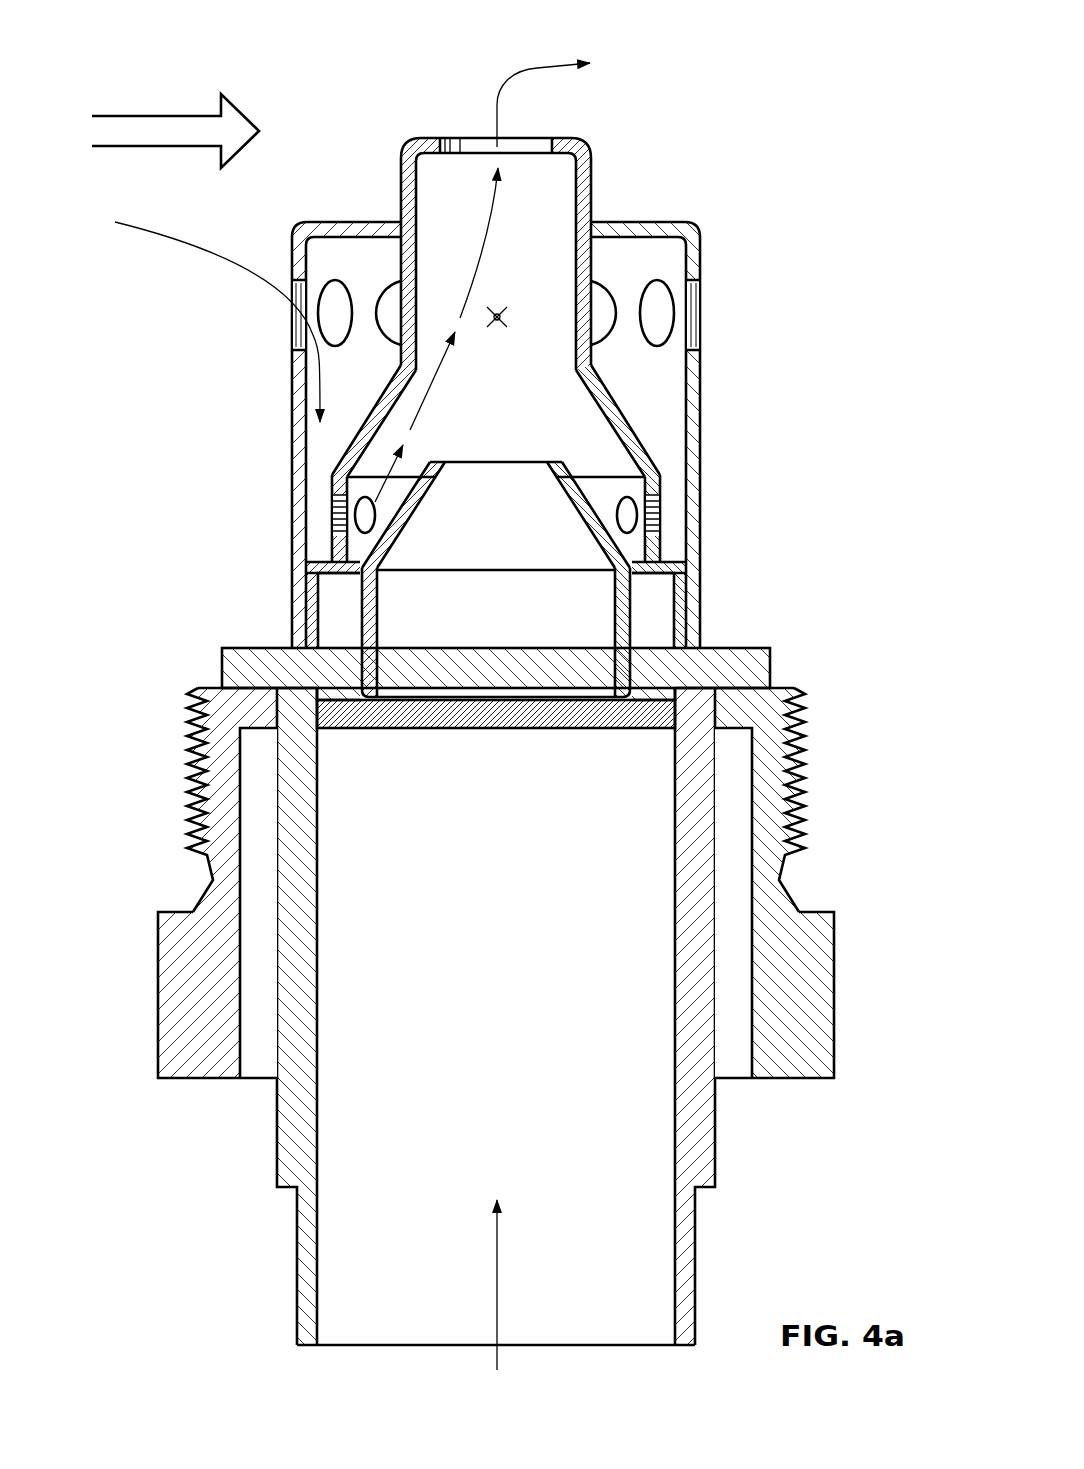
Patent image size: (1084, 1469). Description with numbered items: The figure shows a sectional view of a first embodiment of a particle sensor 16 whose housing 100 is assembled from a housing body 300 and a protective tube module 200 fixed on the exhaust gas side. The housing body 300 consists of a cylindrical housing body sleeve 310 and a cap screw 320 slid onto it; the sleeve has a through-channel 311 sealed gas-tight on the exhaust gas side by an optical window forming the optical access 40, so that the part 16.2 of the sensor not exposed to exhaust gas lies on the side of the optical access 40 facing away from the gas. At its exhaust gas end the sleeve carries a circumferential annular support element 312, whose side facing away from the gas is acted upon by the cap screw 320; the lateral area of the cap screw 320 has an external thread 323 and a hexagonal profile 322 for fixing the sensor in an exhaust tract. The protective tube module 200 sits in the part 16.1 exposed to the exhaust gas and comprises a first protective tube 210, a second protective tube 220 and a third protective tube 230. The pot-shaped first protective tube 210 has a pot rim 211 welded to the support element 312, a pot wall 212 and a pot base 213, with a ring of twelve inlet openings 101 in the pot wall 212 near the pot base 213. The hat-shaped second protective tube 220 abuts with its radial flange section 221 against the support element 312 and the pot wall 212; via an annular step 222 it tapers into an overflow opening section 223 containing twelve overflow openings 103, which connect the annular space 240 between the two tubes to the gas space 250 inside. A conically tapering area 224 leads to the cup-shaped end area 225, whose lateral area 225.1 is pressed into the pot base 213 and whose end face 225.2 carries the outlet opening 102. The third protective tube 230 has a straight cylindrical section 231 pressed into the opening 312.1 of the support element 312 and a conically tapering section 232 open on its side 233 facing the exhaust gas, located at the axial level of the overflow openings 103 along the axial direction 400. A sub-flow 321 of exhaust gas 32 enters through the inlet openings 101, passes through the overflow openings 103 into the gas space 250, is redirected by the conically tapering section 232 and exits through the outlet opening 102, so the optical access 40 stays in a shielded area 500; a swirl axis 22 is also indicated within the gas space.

The particle sensor 16 is at (850, 412).
The part exposed to the exhaust gas 16.1 is at (862, 313).
The part not exposed to the exhaust gas 16.2 is at (474, 871).
The swirl axis 22 is at (504, 316).
The exhaust gas 32 is at (130, 114).
The optical access 40 is at (532, 710).
The housing 100 is at (840, 538).
The inlet openings 101 is at (302, 334).
The outlet opening 102 is at (475, 146).
The overflow openings 103 is at (345, 525).
The protective tube module 200 is at (748, 262).
The first protective tube 210 is at (498, 405).
The pot rim 211 is at (310, 638).
The pot wall 212 is at (292, 462).
The pot base 213 is at (355, 222).
The second protective tube 220 is at (497, 494).
The radial flange section 221 is at (315, 600).
The annular step 222 is at (330, 562).
The overflow opening section 223 is at (656, 486).
The conically tapering area 224 is at (637, 444).
The end area 225 is at (509, 214).
The lateral area 225.1 is at (593, 184).
The end face 225.2 is at (557, 137).
The third protective tube 230 is at (498, 557).
The straight cylindrical section 231 is at (625, 608).
The conically tapering section 232 is at (610, 540).
The side facing the exhaust gas 233 is at (490, 462).
The annular space 240 is at (338, 388).
The gas space 250 is at (477, 411).
The housing body 300 is at (835, 852).
The housing body sleeve 310 is at (283, 1150).
The through-channel 311 is at (477, 1116).
The support element 312 is at (543, 674).
The opening 312.1 is at (363, 683).
The cap screw 320 is at (447, 883).
The sub-flow 321 is at (548, 43).
The hexagonal profile 322 is at (160, 1005).
The external thread 323 is at (185, 757).
The axial direction 400 is at (497, 1308).
The shielded area 500 is at (477, 623).